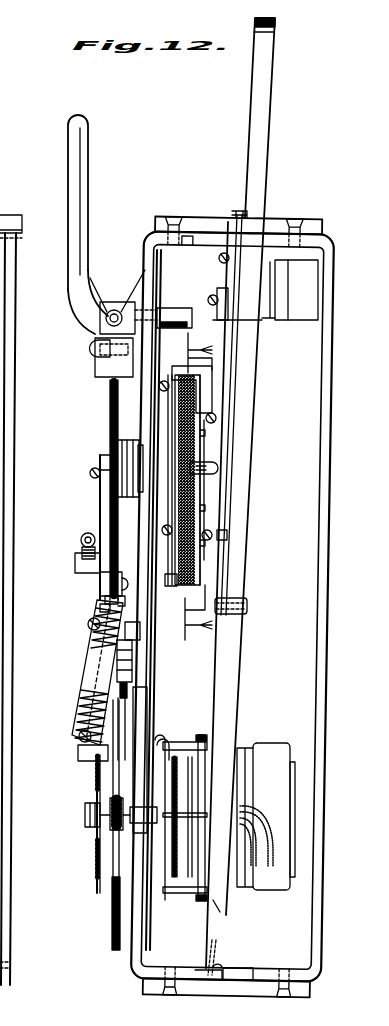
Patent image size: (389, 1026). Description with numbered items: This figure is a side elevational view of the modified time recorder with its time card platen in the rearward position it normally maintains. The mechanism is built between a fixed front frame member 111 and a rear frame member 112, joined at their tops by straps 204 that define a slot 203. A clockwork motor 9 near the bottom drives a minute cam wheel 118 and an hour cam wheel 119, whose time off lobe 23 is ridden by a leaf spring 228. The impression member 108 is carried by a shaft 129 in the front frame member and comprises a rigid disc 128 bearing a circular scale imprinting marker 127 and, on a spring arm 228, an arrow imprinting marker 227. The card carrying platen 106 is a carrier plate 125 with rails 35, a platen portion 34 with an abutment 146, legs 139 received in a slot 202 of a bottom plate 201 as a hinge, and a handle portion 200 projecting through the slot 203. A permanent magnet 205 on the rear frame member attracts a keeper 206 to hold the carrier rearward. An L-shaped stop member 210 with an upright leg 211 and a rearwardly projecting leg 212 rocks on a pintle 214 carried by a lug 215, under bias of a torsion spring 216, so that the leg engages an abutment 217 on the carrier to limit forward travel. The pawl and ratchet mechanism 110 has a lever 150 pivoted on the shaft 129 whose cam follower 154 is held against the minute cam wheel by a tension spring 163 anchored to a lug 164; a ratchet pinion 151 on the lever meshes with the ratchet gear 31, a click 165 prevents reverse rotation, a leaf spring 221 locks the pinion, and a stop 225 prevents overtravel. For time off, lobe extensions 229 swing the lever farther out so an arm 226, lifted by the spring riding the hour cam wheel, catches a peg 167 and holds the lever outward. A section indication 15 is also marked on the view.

The clockwork motor 9 is at (257, 745).
The section line 15 is at (186, 486).
The time off lobe 23 is at (160, 748).
The ratchet gear 31 is at (110, 507).
The platen portion 34 is at (228, 537).
The rails 35 is at (232, 350).
The card carrying platen 106 is at (219, 327).
The impression member 108 is at (211, 448).
The pawl and ratchet mechanism 110 is at (81, 780).
The front frame member 111 is at (143, 268).
The rear frame member 112 is at (318, 495).
The minute cam wheel 118 is at (98, 850).
The hour cam wheel 119 is at (110, 912).
The carrier plate 125 is at (245, 411).
The circular scale imprinting marker 127 is at (206, 520).
The rigid disc 128 is at (173, 584).
The shaft 129 is at (215, 471).
The legs 139 is at (218, 906).
The abutment 146 is at (248, 600).
The lever 150 is at (103, 596).
The ratchet pinion 151 is at (103, 601).
The cam follower 154 is at (88, 752).
The tension spring 163 is at (88, 538).
The lug 164 is at (80, 562).
The click 165 is at (103, 371).
The peg 167 is at (136, 631).
The handle portion 200 is at (257, 112).
The plate 201 is at (238, 967).
The slot 202 is at (205, 950).
The slot 203 is at (199, 218).
The straps 204 is at (3, 206).
The permanent magnet 205 is at (278, 296).
The keeper 206 is at (268, 272).
The stop member 210 is at (69, 140).
The upright leg 211 is at (78, 186).
The rearwardly projecting leg 212 is at (170, 308).
The pintle 214 is at (101, 318).
The lug 215 is at (105, 337).
The torsion spring 216 is at (72, 302).
The abutment 217 is at (220, 328).
The leaf spring 221 is at (95, 678).
The stop 225 is at (100, 580).
The arm 226 is at (120, 656).
The arrow imprinting marker 227 is at (213, 378).
The spring arm 228 is at (165, 413).
The extensions 229 is at (100, 795).